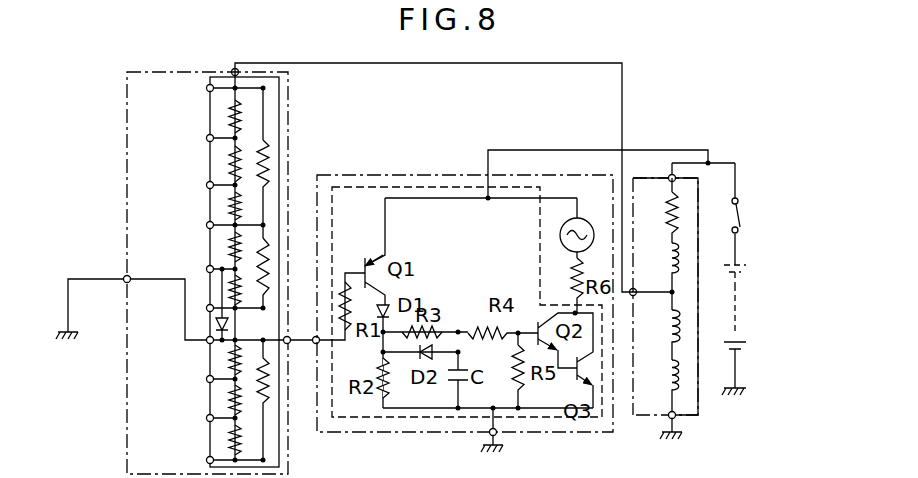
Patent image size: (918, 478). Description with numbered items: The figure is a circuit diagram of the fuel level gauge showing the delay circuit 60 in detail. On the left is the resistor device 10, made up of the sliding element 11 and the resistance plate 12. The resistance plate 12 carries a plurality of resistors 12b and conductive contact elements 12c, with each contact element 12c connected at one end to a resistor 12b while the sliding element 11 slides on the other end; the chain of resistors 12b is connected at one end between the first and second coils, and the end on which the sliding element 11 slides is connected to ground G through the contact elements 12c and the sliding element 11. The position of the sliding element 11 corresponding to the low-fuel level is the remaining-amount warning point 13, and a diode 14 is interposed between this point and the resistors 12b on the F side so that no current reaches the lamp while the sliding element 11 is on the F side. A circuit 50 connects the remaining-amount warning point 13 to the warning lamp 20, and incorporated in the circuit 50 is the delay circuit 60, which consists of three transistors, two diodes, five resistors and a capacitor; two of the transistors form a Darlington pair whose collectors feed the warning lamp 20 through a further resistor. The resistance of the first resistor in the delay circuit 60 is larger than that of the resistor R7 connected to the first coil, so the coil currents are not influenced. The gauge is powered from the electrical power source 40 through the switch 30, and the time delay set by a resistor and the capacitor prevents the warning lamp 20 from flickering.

The resistor device 10 is at (124, 182).
The sliding element 11 is at (201, 341).
The resistance plate 12 is at (228, 70).
The resistors 12b is at (247, 123).
The contact elements 12c is at (216, 148).
The remaining-amount warning point 13 is at (211, 334).
The diode 14 is at (234, 325).
The warning lamp 20 is at (591, 222).
The switch 30 is at (742, 214).
The electrical power source 40 is at (748, 270).
The circuit 50 is at (425, 434).
The delay circuit 60 is at (421, 184).
The ground G is at (61, 331).
The resistor R7 is at (668, 207).